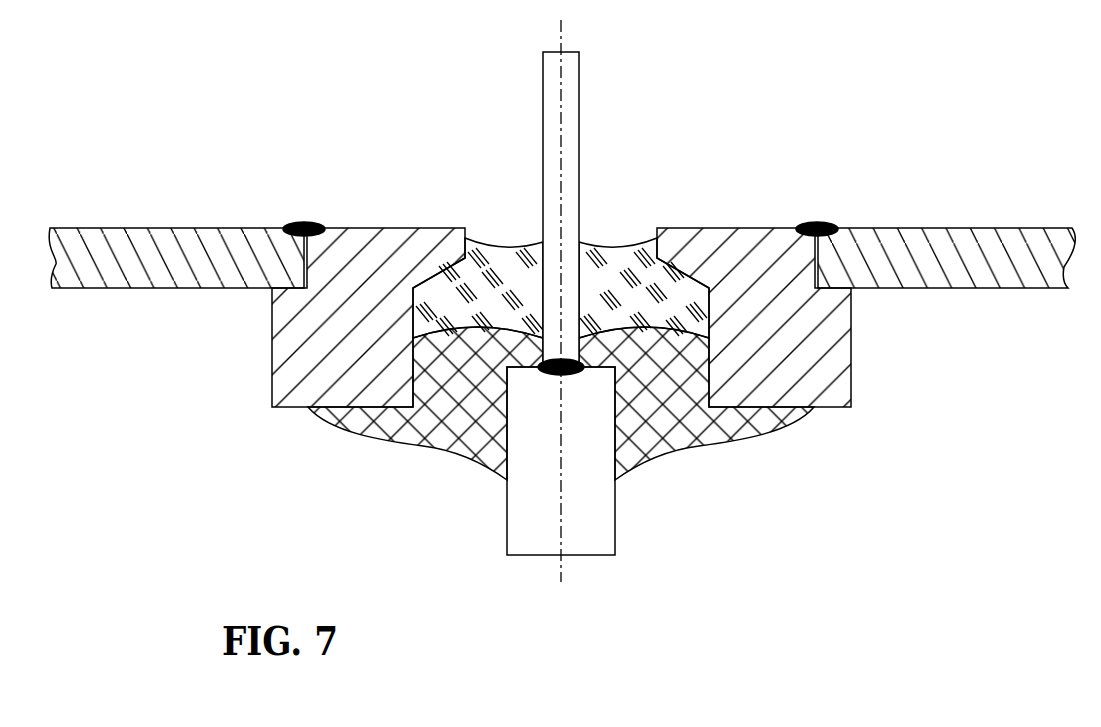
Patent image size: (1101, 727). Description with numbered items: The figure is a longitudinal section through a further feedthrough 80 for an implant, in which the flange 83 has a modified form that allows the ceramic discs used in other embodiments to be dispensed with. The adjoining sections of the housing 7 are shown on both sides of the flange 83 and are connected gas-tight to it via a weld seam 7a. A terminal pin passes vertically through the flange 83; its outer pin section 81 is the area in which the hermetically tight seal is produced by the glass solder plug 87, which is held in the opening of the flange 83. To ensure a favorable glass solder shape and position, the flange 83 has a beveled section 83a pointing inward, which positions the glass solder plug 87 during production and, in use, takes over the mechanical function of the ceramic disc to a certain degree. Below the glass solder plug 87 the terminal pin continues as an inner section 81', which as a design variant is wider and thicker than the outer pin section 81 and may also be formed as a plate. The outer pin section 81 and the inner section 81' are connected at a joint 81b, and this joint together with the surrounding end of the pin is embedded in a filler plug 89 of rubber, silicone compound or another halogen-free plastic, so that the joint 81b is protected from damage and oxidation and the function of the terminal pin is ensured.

The housing 7 is at (950, 230).
The weld seam 7a is at (818, 227).
The feedthrough 80 is at (869, 80).
The outer pin section 81 is at (605, 301).
The joint 81b is at (562, 375).
The inner section of the terminal pin 81' is at (608, 461).
The flange 83 is at (845, 330).
The beveled section 83a is at (685, 268).
The glass solder plug 87 is at (517, 295).
The filler plug 89 is at (468, 437).